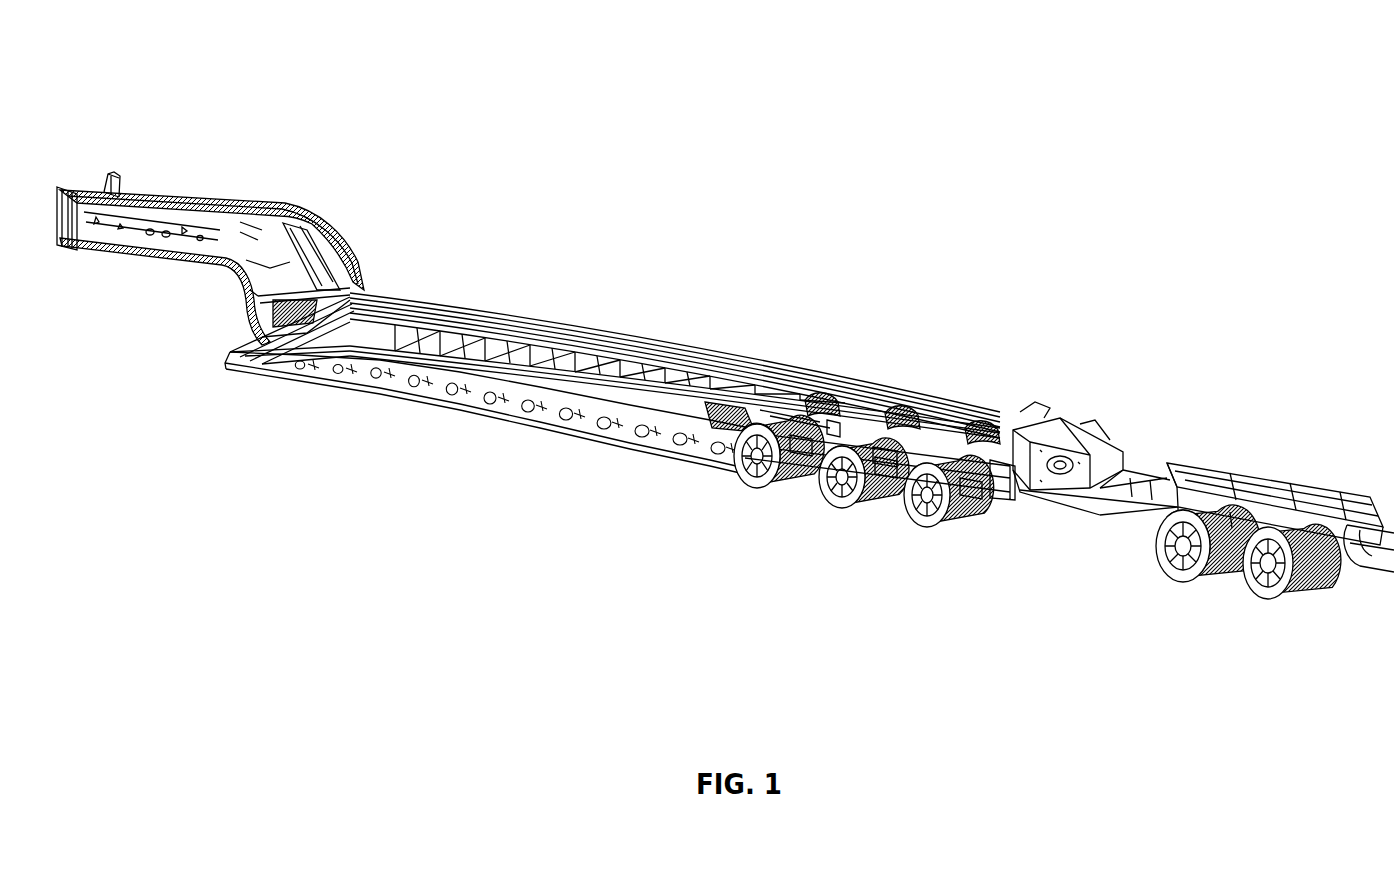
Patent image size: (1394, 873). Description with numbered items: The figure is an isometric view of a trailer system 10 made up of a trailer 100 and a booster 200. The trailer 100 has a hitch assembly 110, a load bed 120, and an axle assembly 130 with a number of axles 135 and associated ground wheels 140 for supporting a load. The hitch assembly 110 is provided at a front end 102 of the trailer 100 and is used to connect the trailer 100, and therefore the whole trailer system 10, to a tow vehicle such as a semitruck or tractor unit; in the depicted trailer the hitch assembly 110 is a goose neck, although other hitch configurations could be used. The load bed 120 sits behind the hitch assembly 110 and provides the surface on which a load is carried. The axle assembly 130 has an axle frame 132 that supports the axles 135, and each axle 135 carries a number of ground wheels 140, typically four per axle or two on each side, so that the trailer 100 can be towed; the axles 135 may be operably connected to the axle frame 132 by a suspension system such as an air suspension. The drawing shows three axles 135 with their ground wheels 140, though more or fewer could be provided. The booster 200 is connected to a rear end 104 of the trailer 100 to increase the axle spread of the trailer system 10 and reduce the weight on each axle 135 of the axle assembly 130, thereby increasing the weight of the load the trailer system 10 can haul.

The trailer system 10 is at (888, 144).
The trailer 100 is at (546, 324).
The front end 102 is at (108, 186).
The rear end 104 is at (1093, 428).
The hitch assembly 110 is at (185, 192).
The load bed 120 is at (698, 362).
The axle assembly 130 is at (982, 542).
The axle frame 132 is at (835, 398).
The axle 135 is at (863, 392).
The ground wheel 140 is at (730, 500).
The booster 200 is at (1291, 490).